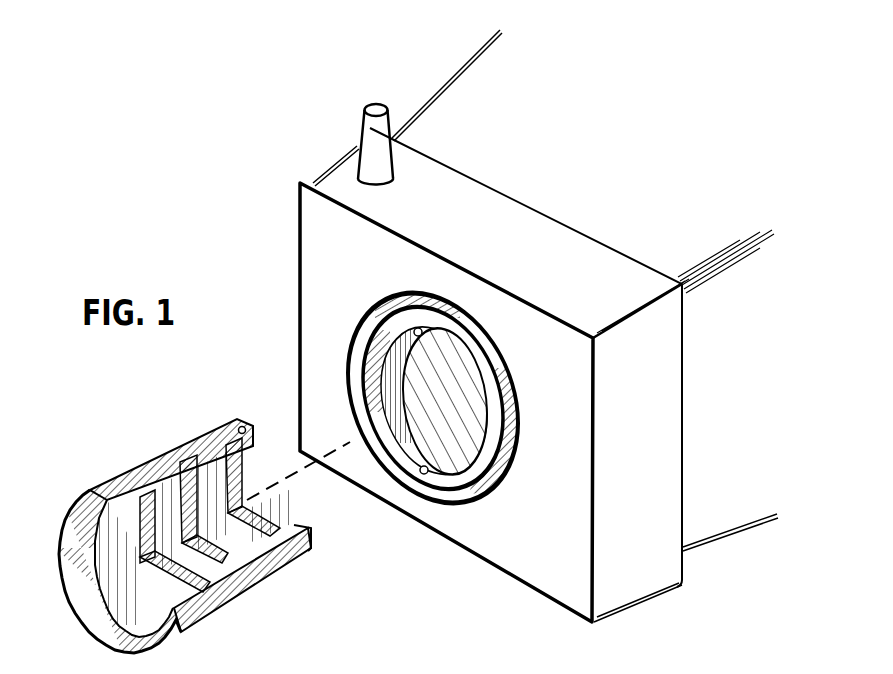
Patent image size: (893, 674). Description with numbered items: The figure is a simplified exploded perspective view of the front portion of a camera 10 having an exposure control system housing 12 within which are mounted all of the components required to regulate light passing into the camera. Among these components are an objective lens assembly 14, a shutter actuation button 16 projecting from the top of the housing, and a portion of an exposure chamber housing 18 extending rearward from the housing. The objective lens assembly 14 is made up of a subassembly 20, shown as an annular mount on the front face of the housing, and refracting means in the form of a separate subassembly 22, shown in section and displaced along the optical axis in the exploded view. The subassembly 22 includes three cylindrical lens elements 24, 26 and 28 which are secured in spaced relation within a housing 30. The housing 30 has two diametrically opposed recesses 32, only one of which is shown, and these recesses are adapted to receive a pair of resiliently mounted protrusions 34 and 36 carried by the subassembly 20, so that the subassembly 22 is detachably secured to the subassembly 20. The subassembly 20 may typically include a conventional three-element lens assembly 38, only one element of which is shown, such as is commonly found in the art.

The camera 10 is at (466, 54).
The exposure control system housing 12 is at (638, 587).
The objective lens assembly 14 is at (357, 524).
The shutter actuation button 16 is at (368, 138).
The exposure chamber housing 18 is at (720, 523).
The subassembly 20 is at (439, 405).
The subassembly 22 is at (171, 519).
The cylindrical lens element 24 is at (130, 580).
The cylindrical lens element 26 is at (188, 465).
The cylindrical lens element 28 is at (230, 483).
The housing 30 is at (120, 478).
The recess 32 is at (245, 427).
The protrusion 34 is at (422, 475).
The protrusion 36 is at (403, 322).
The three-element lens assembly 38 is at (452, 386).